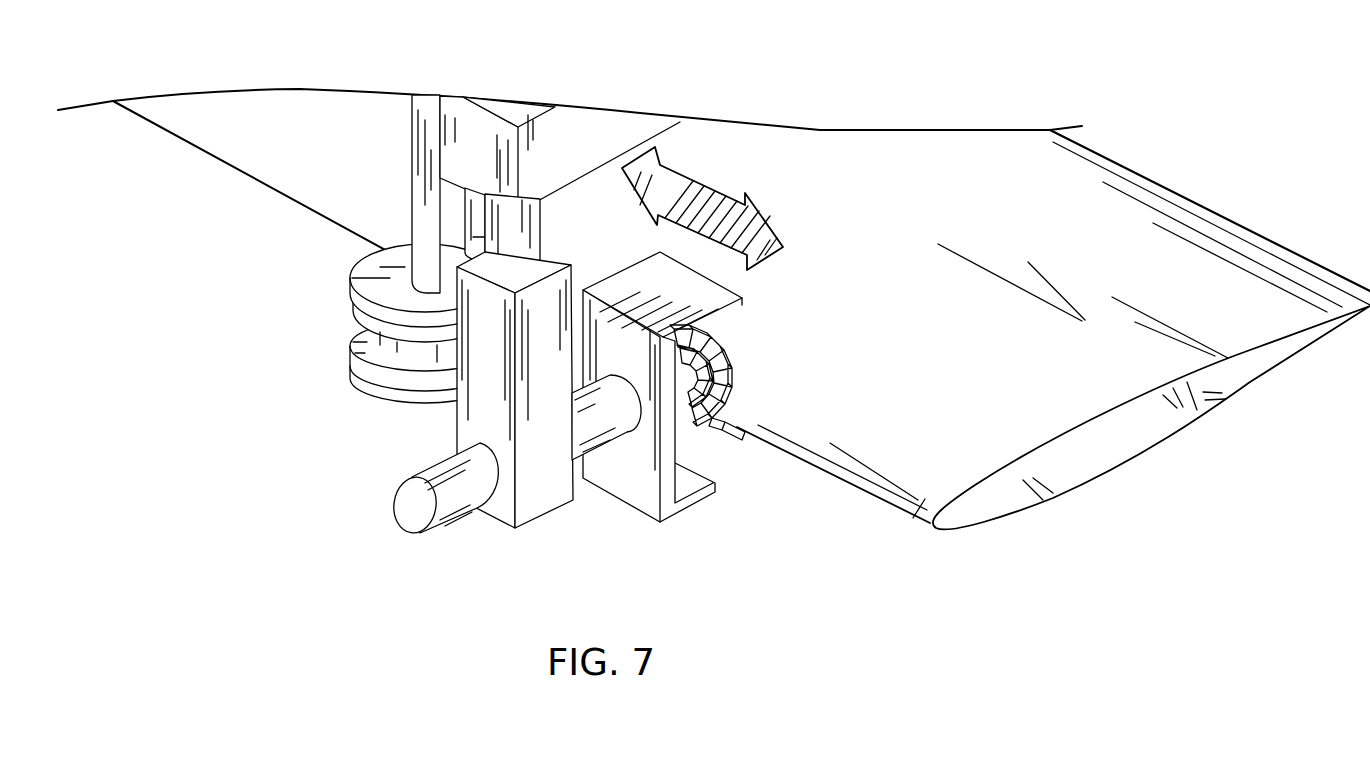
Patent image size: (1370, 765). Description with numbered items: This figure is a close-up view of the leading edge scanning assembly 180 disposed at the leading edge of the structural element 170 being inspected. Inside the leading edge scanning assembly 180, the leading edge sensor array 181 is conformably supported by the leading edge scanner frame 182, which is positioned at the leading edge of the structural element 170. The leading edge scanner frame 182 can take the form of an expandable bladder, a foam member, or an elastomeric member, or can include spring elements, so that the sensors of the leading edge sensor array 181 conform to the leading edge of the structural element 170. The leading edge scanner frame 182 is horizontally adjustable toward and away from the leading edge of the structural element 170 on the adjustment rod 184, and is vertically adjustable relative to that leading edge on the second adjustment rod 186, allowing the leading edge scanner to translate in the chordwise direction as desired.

The structural element 170 is at (912, 518).
The leading edge scanning assembly 180 is at (566, 402).
The leading edge sensor array 181 is at (720, 433).
The leading edge scanner frame 182 is at (638, 478).
The adjustment rod 184 is at (410, 510).
The second adjustment rod 186 is at (527, 228).